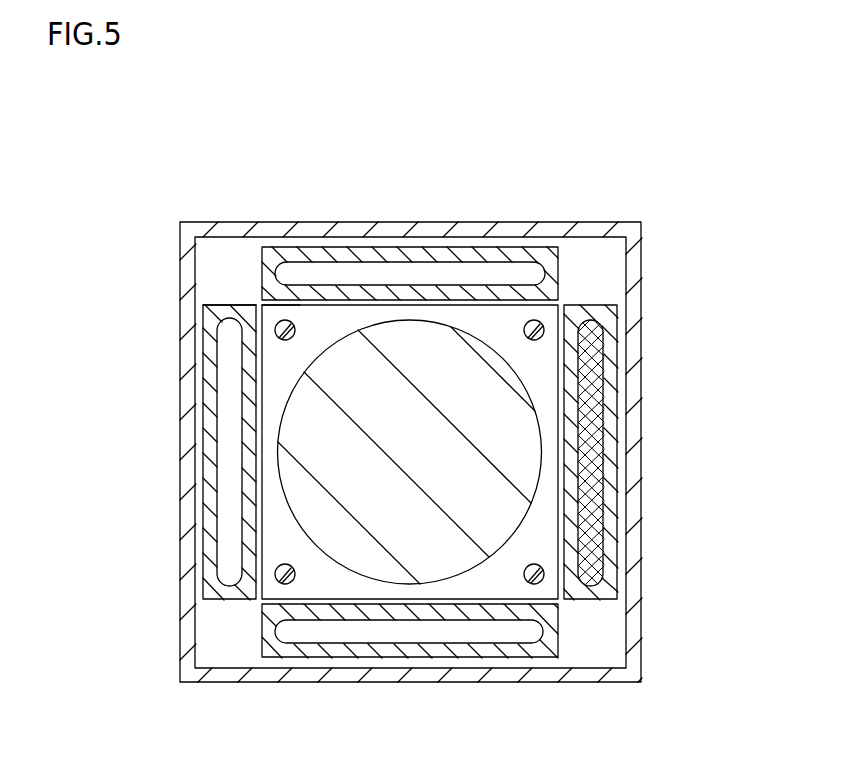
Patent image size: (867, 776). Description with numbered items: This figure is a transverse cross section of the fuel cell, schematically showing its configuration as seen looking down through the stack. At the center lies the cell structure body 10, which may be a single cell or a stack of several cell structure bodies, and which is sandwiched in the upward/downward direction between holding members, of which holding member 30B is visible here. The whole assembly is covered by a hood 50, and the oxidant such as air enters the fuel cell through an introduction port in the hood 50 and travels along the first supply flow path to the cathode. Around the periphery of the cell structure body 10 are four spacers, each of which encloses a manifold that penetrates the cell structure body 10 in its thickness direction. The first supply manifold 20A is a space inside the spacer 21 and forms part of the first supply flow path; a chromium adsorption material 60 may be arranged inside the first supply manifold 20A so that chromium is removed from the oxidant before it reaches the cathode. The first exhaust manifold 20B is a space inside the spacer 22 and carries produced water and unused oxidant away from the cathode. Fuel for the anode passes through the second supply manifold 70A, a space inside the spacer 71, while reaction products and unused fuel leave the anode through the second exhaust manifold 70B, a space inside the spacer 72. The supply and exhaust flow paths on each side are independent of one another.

The cell structure body 10 is at (440, 460).
The spacer 21 is at (604, 321).
The spacer 22 is at (206, 313).
The holding member 30B is at (292, 313).
The hood 50 is at (612, 233).
The chromium adsorption material 60 is at (597, 447).
The first supply manifold 20A is at (653, 452).
The first exhaust manifold 20B is at (231, 424).
The second supply manifold 70A is at (482, 273).
The second exhaust manifold 70B is at (443, 636).
The spacer 71 is at (270, 252).
The spacer 72 is at (548, 645).